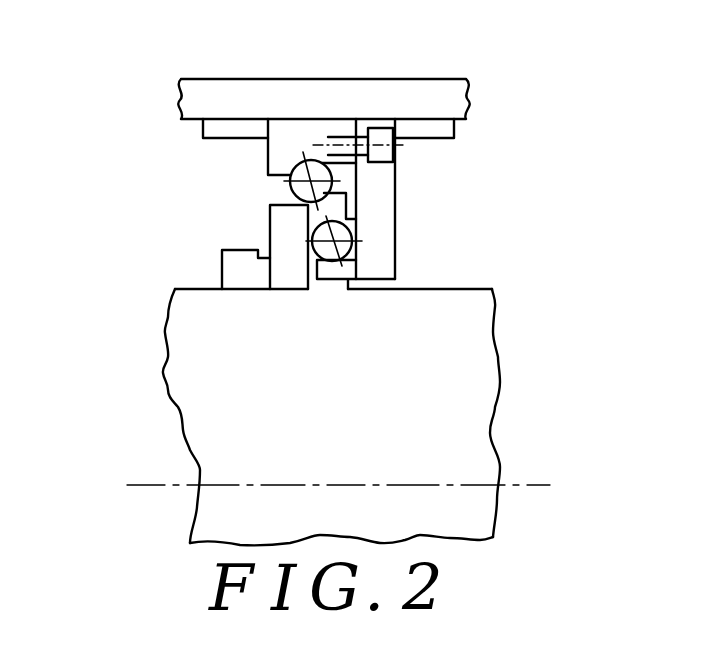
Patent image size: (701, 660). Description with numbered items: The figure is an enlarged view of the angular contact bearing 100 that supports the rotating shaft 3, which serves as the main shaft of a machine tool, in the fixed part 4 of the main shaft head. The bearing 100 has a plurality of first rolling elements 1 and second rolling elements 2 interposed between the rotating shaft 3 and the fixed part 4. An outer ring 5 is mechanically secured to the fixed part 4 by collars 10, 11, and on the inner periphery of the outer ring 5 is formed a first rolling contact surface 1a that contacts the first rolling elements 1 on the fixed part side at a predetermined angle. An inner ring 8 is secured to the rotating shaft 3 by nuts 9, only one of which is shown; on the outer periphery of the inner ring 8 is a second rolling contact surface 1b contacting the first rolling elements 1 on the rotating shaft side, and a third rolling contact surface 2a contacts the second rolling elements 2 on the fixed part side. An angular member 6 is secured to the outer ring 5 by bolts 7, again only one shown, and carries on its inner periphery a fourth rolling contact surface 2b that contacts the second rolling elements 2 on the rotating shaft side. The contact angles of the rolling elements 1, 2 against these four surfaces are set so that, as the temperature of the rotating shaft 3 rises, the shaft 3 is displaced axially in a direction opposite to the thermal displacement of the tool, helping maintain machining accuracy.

The first rolling elements 1 is at (284, 181).
The first rolling contact surface 1a is at (296, 164).
The second rolling contact surface 1b is at (329, 199).
The second rolling elements 2 is at (362, 241).
The third rolling contact surface 2a is at (320, 224).
The fourth rolling contact surface 2b is at (353, 259).
The rotating shaft 3 is at (470, 332).
The fixed part 4 is at (400, 90).
The outer ring 5 is at (289, 133).
The angular member 6 is at (378, 179).
The bolt 7 is at (393, 157).
The inner ring 8 is at (293, 272).
The nut 9 is at (232, 262).
The collar 10 is at (230, 127).
The collar 11 is at (455, 128).
The angular contact bearing 100 is at (185, 145).